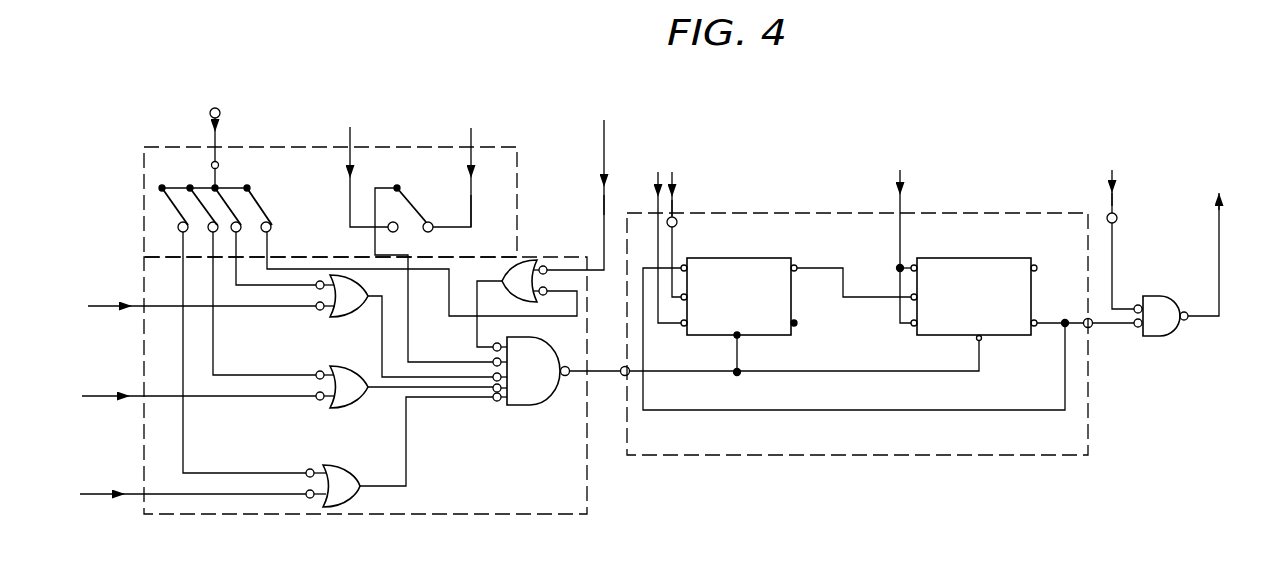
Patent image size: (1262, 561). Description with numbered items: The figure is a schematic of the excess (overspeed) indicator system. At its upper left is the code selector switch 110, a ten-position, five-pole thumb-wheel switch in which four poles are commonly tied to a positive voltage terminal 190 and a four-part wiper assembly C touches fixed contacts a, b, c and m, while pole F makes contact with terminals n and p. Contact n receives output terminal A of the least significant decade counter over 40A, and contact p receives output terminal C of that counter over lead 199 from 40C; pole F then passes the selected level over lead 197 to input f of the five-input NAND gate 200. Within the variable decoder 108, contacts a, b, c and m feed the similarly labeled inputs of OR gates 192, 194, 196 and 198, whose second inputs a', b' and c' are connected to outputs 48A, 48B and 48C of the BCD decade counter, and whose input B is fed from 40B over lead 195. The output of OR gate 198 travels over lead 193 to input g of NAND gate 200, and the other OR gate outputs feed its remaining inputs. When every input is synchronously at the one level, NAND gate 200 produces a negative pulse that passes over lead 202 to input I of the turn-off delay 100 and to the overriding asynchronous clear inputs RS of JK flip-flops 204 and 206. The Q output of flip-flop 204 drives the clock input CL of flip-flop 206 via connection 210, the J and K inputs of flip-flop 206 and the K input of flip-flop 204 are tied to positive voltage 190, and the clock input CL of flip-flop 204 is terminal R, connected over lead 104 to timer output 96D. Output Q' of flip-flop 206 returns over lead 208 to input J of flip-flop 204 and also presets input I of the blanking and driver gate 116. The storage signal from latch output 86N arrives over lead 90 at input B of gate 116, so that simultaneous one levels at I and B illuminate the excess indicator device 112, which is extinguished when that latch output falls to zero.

The positive voltage terminal 190 is at (551, 205).
The code selector switch 110 is at (523, 88).
The output terminal A of decade counter 40 40A is at (361, 160).
The output terminal B of decade counter 40 40B is at (588, 182).
The output terminal C of decade counter 40 40C is at (464, 160).
The lead 199 is at (472, 207).
The lead 195 is at (604, 205).
The lead 197 is at (412, 288).
The OR gate 198 is at (540, 259).
The lead 193 is at (477, 345).
The OR gate 196 is at (357, 285).
The OR gate 194 is at (360, 358).
The OR gate 192 is at (345, 470).
The five-input NAND gate 200 is at (533, 406).
The lead 202 is at (600, 374).
The variable decoder 108 is at (491, 514).
The output terminal A of decade counter 48 48A is at (169, 483).
The output terminal B of decade counter 48 48B is at (179, 388).
The output terminal C of decade counter 48 48C is at (184, 303).
The turn-off delay circuit 100 is at (1021, 458).
The output terminal D of data-transfer interval timer 96 96D is at (687, 223).
The lead 104 is at (673, 208).
The JK flip-flop 204 is at (786, 258).
The lead 208 is at (775, 412).
The interconnection line 210 is at (858, 265).
The JK flip-flop 206 is at (986, 258).
The blanking and driver gate 116 is at (1222, 132).
The output terminal N of bistable latch 86 86N is at (1133, 237).
The lead 90 is at (1112, 198).
The excess indicator device 112 is at (1215, 242).